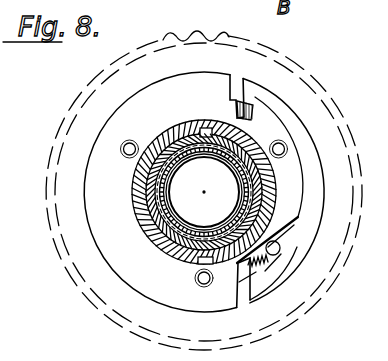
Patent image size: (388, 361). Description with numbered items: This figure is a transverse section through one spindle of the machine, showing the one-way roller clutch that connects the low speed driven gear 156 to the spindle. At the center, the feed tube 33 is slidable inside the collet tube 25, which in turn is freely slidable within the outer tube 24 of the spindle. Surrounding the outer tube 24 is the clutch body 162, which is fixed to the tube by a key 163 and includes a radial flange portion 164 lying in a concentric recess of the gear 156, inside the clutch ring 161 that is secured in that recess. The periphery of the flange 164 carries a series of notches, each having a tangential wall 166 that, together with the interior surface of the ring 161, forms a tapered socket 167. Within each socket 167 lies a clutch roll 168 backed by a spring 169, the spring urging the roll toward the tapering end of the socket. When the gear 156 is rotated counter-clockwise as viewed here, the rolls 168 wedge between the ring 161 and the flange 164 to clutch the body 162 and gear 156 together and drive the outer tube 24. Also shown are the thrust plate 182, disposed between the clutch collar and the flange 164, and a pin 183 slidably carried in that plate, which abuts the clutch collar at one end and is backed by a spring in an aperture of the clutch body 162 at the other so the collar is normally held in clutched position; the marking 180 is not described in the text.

The low speed driven gear 156 is at (196, 32).
The drive unit 180 is at (319, 3).
The thrust plate 182 is at (229, 80).
The key 163 is at (206, 128).
The pin 183 is at (133, 140).
The clutch ring 161 is at (311, 164).
The radial flange portion 164 is at (297, 194).
The tapered socket 167 is at (298, 218).
The tangential wall 166 is at (280, 243).
The clutch roll 168 is at (280, 252).
The spring 169 is at (262, 264).
The outer tube 24 is at (148, 187).
The collet tube 25 is at (152, 212).
The feed tube 33 is at (151, 237).
The clutch body 162 is at (172, 252).